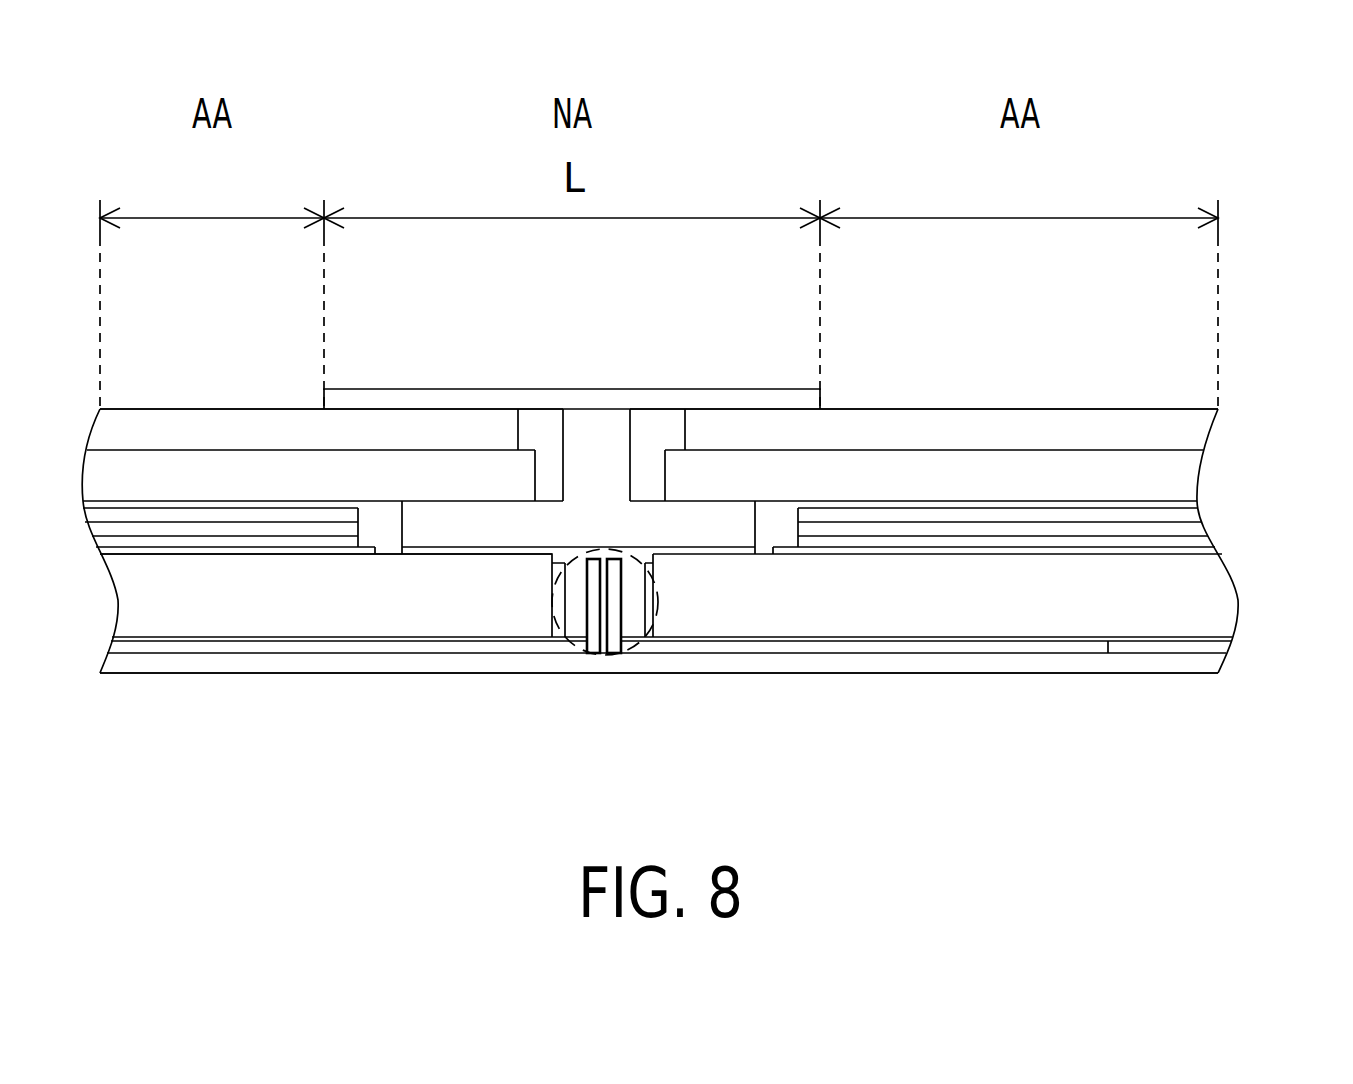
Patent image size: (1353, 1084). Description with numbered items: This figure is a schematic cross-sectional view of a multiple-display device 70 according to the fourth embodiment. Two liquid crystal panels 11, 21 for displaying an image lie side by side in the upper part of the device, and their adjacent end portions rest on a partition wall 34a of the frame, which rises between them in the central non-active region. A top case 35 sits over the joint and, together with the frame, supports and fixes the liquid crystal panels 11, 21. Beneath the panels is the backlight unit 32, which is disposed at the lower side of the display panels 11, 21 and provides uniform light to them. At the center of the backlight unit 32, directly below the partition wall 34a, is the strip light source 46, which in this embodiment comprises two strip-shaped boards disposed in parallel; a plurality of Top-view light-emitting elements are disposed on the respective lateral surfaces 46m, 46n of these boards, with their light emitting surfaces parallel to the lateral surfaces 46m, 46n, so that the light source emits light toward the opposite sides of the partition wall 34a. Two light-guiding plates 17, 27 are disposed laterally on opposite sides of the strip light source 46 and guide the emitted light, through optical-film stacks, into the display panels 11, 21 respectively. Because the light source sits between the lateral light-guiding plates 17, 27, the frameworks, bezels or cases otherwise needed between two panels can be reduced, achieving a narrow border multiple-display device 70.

The multiple-display device 70 is at (1333, 133).
The liquid crystal panel 11 is at (210, 408).
The liquid crystal panel 21 is at (1023, 408).
The top case 35 is at (425, 398).
The partition wall 34a is at (589, 432).
The light-guiding plate 17 is at (330, 610).
The light-guiding plate 27 is at (878, 610).
The strip light source 46 is at (602, 655).
The lateral surface 46m is at (586, 602).
The lateral surface 46n is at (622, 602).
The backlight unit 32 is at (915, 755).